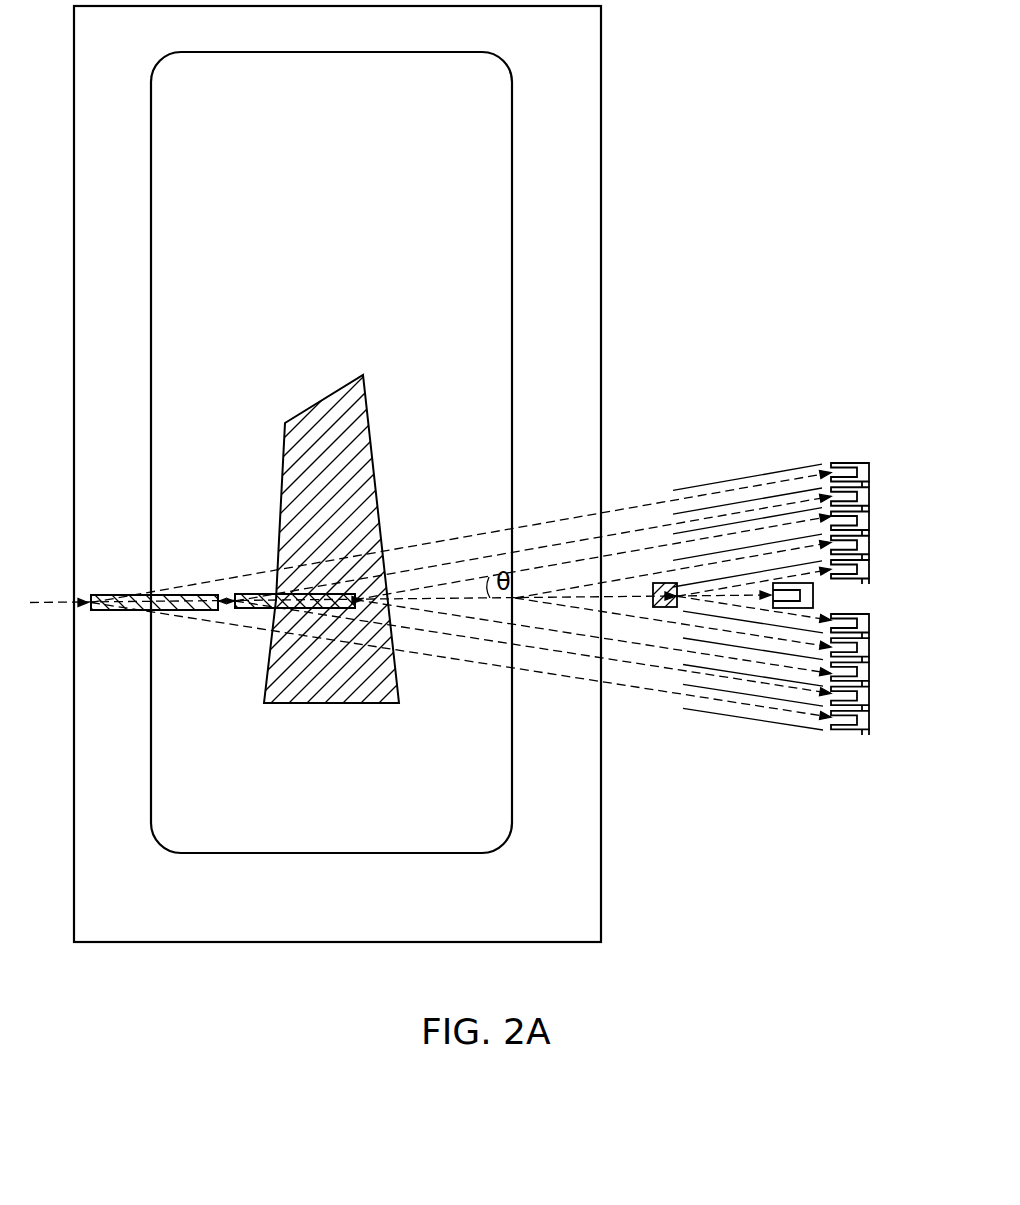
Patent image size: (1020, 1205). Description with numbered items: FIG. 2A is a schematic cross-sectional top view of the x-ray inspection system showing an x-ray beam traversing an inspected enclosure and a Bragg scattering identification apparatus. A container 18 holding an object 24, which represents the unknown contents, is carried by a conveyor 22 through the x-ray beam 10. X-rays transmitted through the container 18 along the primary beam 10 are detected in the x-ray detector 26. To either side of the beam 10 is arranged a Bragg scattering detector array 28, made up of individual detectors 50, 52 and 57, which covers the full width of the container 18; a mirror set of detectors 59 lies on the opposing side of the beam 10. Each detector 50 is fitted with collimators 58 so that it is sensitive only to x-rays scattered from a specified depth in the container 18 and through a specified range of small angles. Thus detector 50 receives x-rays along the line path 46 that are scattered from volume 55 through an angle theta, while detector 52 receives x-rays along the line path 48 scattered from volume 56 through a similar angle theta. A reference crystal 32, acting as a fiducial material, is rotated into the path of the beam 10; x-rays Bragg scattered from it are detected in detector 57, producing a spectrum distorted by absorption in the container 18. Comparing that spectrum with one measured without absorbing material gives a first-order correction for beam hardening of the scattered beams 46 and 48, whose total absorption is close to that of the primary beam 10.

The x-ray beam 10 is at (49, 600).
The container 18 is at (512, 132).
The conveyor 22 is at (601, 238).
The object 24 is at (372, 437).
The x-ray detector 26 is at (815, 604).
The Bragg scattering detector array 28 is at (877, 499).
The reference crystal 32 is at (661, 610).
The line path 46 is at (642, 503).
The line path 48 is at (578, 537).
The detector 50 is at (870, 466).
The detector 52 is at (870, 498).
The volume 55 is at (183, 594).
The volume 56 is at (255, 609).
The detector 57 is at (882, 658).
The collimators 58 is at (783, 722).
The mirror set of detectors 59 is at (872, 686).